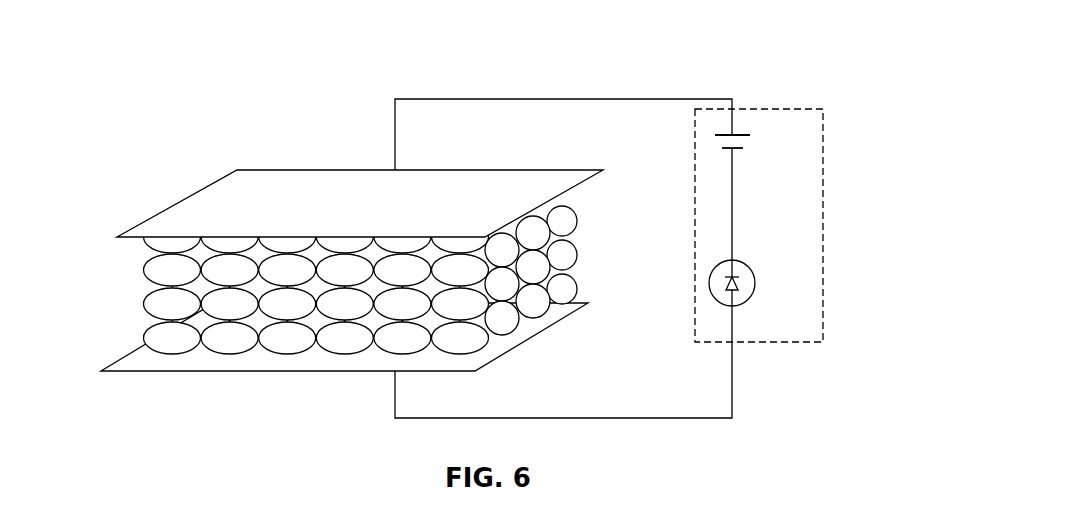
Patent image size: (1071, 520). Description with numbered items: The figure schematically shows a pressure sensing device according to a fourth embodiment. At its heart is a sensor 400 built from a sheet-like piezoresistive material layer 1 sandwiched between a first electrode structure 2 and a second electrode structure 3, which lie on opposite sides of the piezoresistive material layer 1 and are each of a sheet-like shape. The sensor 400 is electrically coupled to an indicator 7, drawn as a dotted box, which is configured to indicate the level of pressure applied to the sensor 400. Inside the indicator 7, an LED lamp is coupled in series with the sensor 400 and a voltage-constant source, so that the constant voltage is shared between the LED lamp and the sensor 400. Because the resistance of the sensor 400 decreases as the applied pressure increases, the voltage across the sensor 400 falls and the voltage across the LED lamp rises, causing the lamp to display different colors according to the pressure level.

The sensor 400 is at (871, 31).
The piezoresistive material layer 1 is at (532, 243).
The first electrode structure 2 is at (408, 193).
The second electrode structure 3 is at (465, 362).
The indicator 7 is at (823, 167).